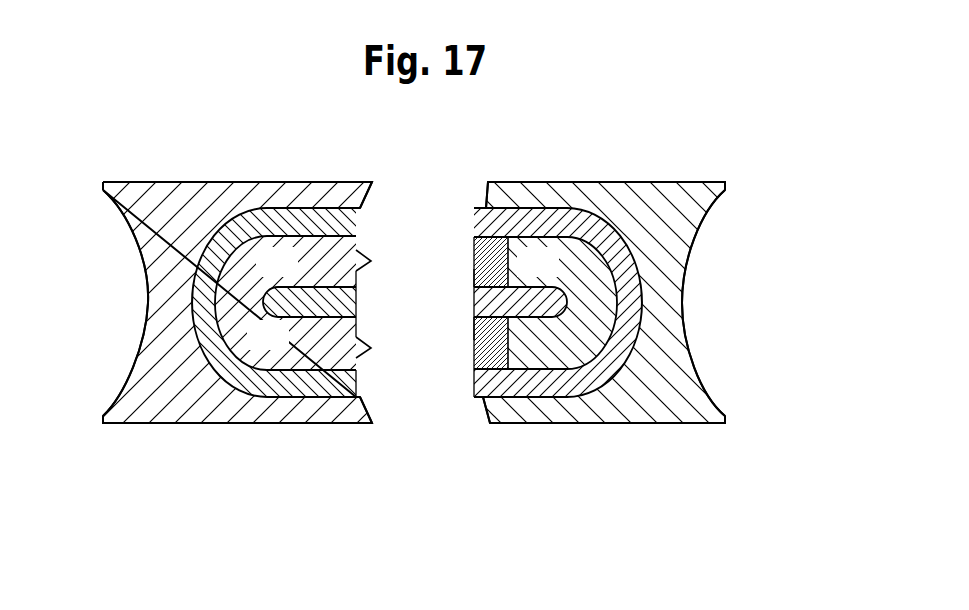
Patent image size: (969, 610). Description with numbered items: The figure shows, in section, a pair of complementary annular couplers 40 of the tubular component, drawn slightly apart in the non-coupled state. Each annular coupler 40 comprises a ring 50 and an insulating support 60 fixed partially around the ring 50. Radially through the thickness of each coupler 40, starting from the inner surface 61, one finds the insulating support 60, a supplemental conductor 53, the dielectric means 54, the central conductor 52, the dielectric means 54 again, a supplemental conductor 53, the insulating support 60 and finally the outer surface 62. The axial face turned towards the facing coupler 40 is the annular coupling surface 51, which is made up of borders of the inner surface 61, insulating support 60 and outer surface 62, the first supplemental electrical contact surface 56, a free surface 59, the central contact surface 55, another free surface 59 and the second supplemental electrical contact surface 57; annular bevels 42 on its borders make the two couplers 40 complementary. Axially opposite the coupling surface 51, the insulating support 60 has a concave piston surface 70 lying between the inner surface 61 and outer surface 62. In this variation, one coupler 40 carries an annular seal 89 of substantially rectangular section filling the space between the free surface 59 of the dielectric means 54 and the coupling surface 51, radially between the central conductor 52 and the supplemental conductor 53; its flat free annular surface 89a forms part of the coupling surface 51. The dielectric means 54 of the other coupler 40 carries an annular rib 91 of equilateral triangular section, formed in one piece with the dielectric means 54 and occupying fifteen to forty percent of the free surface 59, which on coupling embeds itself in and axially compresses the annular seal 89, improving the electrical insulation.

The annular coupler 40 is at (96, 383).
The bevel 42 is at (468, 415).
The ring 50 is at (308, 407).
The annular coupling surface 51 is at (470, 188).
The central conductor 52 is at (320, 300).
The supplemental conductor 53 is at (200, 300).
The dielectric means 54 is at (259, 276).
The central contact surface 55 is at (475, 302).
The first supplemental electrical contact surface 56 is at (477, 218).
The second supplemental electrical contact surface 57 is at (468, 377).
The free surface 59 is at (470, 262).
The insulating support 60 is at (117, 418).
The inner surface 61 is at (205, 182).
The outer surface 62 is at (168, 423).
The piston surface 70 is at (146, 335).
The annular seal 89 is at (505, 272).
The free annular surface 89a is at (365, 232).
The annular rib 91 is at (363, 255).